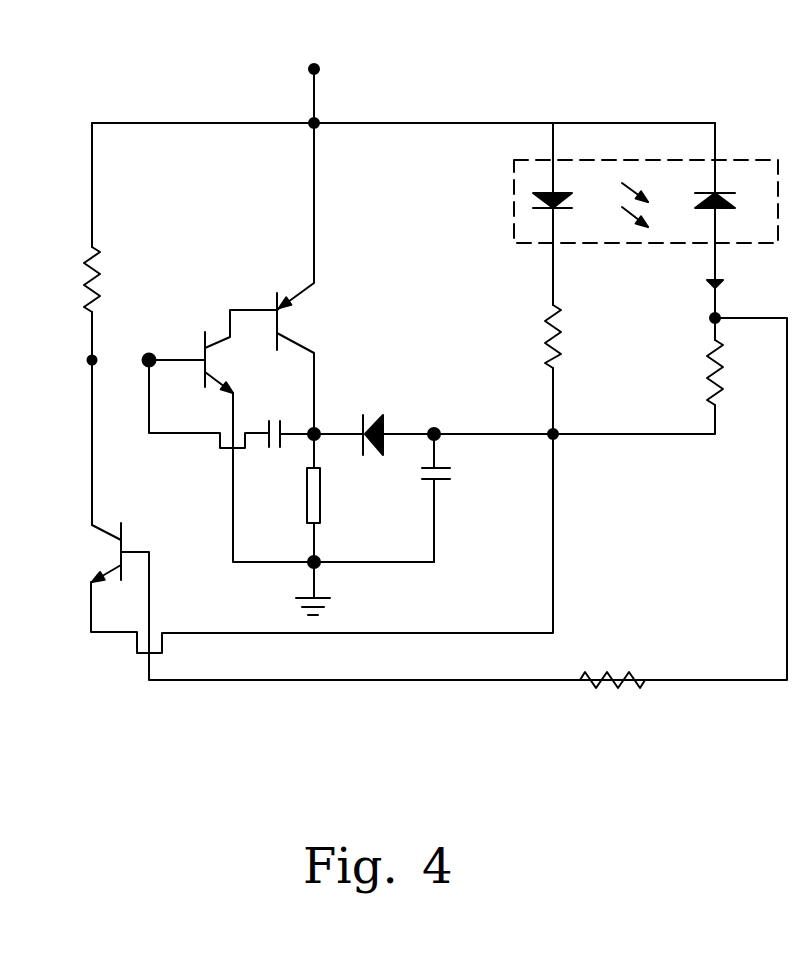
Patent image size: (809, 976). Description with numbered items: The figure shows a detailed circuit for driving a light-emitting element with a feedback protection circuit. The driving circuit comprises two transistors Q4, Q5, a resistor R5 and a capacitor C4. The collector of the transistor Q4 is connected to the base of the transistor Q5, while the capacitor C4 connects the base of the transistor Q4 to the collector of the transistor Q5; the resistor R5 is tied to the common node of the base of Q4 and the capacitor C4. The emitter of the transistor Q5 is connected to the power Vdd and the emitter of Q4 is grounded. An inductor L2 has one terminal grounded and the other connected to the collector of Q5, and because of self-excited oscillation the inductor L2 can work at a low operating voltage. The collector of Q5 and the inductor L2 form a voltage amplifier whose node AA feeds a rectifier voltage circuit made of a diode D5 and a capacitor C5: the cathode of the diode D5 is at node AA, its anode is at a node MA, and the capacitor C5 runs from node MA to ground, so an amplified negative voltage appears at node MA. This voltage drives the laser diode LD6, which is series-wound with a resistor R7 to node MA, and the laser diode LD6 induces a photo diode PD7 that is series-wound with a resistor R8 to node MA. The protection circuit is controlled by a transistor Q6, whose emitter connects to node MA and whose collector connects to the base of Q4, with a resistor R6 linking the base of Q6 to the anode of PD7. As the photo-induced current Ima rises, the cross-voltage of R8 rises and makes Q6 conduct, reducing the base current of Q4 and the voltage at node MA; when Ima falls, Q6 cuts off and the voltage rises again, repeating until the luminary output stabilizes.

The power Vdd is at (321, 78).
The resistor R5 is at (76, 279).
The transistor Q4 is at (188, 358).
The transistor Q5 is at (272, 303).
The capacitor C4 is at (275, 418).
The node AA is at (329, 422).
The diode D5 is at (380, 420).
The node MA is at (446, 421).
The capacitor C5 is at (455, 481).
The inductor L2 is at (298, 498).
The transistor Q6 is at (129, 551).
The laser diode LD6 is at (575, 207).
The photo diode PD7 is at (737, 207).
The photo-induced current Ima is at (735, 287).
The resistor R7 is at (536, 336).
The resistor R8 is at (730, 373).
The resistor R6 is at (612, 666).